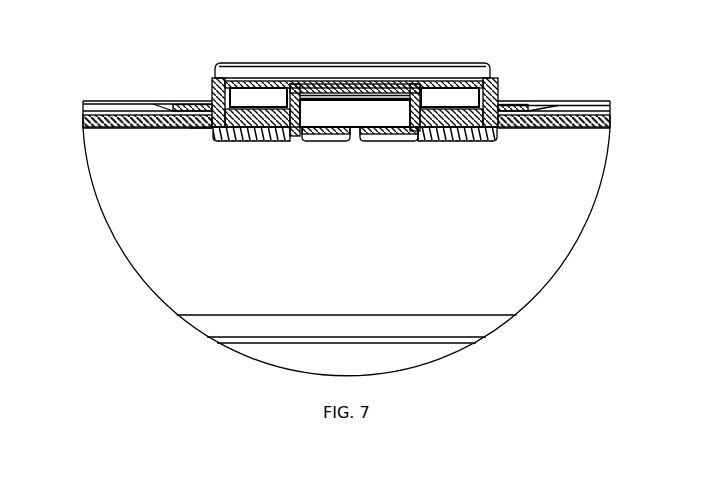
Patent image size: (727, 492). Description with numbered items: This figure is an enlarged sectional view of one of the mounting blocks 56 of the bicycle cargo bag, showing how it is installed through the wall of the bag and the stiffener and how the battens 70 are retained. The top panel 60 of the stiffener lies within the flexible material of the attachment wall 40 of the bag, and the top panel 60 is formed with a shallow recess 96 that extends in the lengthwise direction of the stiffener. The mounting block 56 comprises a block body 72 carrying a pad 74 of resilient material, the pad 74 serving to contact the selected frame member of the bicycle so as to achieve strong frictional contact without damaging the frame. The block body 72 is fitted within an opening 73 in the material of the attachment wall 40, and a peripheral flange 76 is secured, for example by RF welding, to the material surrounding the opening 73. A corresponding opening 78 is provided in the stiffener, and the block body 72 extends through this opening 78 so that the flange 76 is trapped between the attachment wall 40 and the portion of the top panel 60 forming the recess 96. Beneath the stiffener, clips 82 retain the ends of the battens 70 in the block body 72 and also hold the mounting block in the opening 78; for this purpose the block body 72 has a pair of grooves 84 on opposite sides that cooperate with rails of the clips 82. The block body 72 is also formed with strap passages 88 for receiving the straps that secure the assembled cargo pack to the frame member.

The mounting block 56 is at (233, 60).
The pad 74 is at (467, 65).
The attachment wall 40 is at (118, 101).
The top panel 60 is at (163, 108).
The batten 70 is at (95, 120).
The opening 73 is at (200, 109).
The shallow recess 96 is at (528, 112).
The peripheral flange 76 is at (173, 108).
The block body 72 is at (200, 117).
The clip 82 is at (253, 133).
The groove 84 is at (378, 141).
The strap passage 88 is at (390, 116).
The opening 78 is at (470, 128).